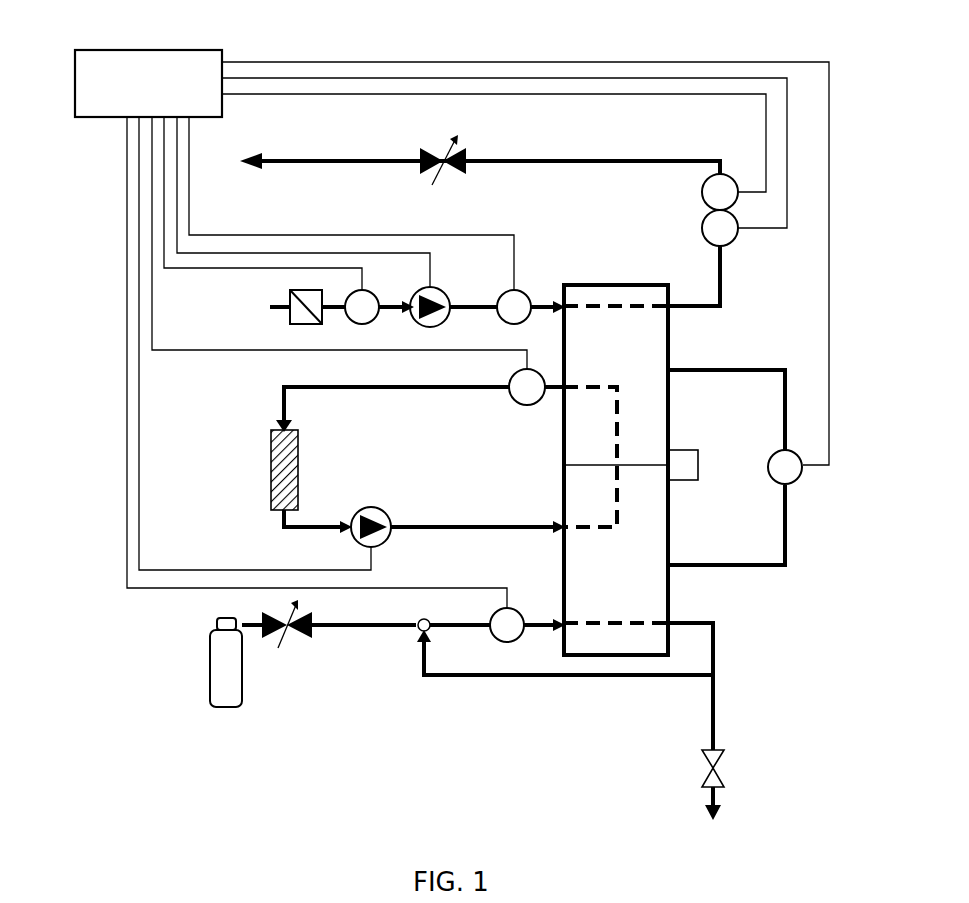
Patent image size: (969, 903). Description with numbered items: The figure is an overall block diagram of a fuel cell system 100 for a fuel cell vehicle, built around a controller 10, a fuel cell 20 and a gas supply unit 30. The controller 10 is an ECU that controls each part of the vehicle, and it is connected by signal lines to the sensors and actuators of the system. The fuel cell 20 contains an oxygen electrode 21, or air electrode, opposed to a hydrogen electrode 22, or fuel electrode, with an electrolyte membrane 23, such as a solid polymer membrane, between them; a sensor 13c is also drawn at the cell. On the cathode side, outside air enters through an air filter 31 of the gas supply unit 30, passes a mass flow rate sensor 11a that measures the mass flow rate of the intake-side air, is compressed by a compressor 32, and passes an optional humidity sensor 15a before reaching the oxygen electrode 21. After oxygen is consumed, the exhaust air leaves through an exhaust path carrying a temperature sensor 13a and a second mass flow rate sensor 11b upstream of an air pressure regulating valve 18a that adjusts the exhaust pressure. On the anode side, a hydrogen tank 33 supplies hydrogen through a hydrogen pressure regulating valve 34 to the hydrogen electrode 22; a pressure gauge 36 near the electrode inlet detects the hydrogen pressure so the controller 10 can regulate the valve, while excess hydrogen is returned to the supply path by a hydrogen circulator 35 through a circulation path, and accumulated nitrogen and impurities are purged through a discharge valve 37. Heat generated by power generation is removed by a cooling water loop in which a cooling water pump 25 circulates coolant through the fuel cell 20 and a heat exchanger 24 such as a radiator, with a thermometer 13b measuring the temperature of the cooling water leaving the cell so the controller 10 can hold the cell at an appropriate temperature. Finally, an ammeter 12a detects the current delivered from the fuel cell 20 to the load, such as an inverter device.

The fuel cell system 100 is at (940, 35).
The controller 10 is at (72, 100).
The gas supply unit 30 is at (176, 302).
The air filter 31 is at (290, 318).
The mass flow rate sensor 11a is at (365, 290).
The compressor 32 is at (440, 288).
The humidity sensor 15a is at (522, 290).
The air pressure regulating valve 18a is at (450, 148).
The temperature sensor 13a is at (738, 180).
The mass flow rate sensor 11b is at (738, 236).
The fuel cell 20 is at (682, 340).
The oxygen electrode 21 is at (617, 338).
The hydrogen electrode 22 is at (617, 588).
The electrolyte membrane 23 is at (638, 477).
The temperature sensor 13c is at (699, 463).
The ammeter 12a is at (800, 480).
The thermometer 13b is at (520, 404).
The heat exchanger 24 is at (270, 470).
The cooling water pump 25 is at (365, 510).
The hydrogen tank 33 is at (222, 666).
The hydrogen pressure regulating valve 34 is at (295, 641).
The hydrogen circulator 35 is at (418, 632).
The pressure gauge 36 is at (505, 644).
The discharge valve 37 is at (728, 762).